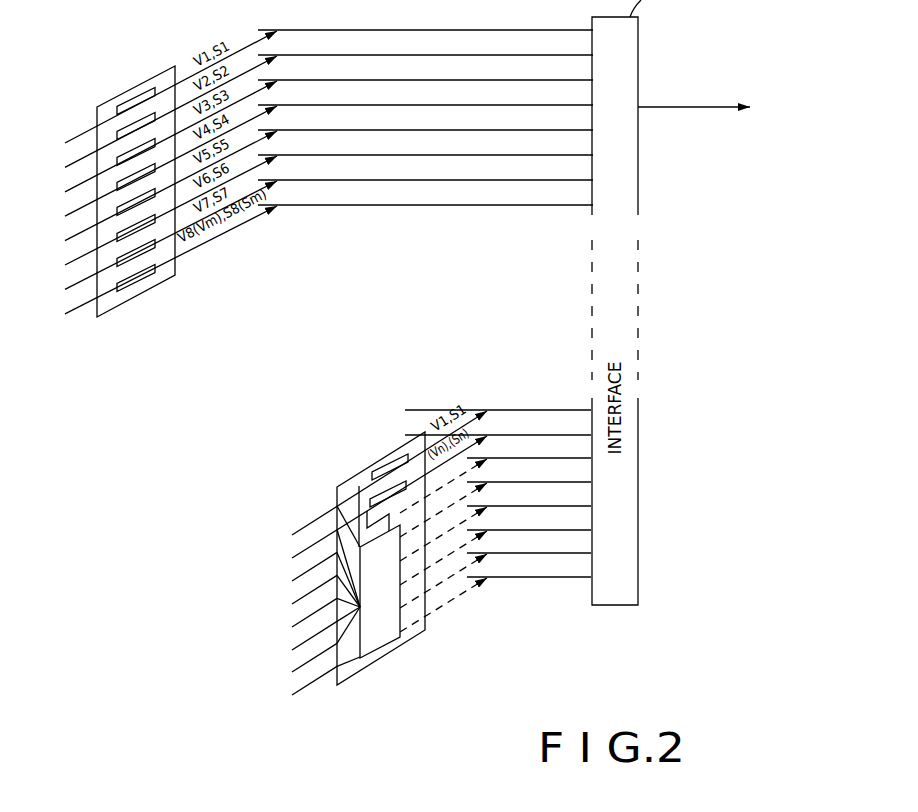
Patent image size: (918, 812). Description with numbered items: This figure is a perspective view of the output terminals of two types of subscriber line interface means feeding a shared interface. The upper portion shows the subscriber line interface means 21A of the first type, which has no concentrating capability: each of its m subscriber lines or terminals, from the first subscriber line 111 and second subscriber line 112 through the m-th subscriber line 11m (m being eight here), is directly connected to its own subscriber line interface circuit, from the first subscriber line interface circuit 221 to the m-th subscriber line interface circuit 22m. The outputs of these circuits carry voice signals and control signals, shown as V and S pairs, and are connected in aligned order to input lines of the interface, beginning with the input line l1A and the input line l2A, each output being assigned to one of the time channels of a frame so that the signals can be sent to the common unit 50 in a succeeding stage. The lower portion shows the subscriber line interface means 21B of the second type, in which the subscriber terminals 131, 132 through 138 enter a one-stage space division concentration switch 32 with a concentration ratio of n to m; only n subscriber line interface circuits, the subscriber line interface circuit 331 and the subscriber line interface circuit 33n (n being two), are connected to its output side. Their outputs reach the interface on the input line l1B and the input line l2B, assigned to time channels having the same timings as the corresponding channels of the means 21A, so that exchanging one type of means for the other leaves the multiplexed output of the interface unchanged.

The subscriber line interface means of the first type 21A is at (96, 320).
The subscriber line interface circuit 221 is at (132, 92).
The subscriber line interface circuit 22m is at (134, 282).
The subscriber line 111 is at (158, 93).
The subscriber line 112 is at (157, 119).
The subscriber line 11m is at (153, 268).
The input line of the interface l1A is at (328, 30).
The input line of the interface l2A is at (328, 55).
The common unit 50 is at (701, 77).
The subscriber line interface means of the second type 21B is at (344, 689).
The space division concentration switch 32 is at (392, 642).
The subscriber line interface circuit 331 is at (387, 466).
The subscriber line interface circuit 33n is at (376, 500).
The subscriber terminal 131 is at (372, 479).
The subscriber terminal 132 is at (372, 504).
The subscriber terminal 138 is at (308, 685).
The input line of the interface l1B is at (510, 410).
The input line of the interface l2B is at (510, 435).